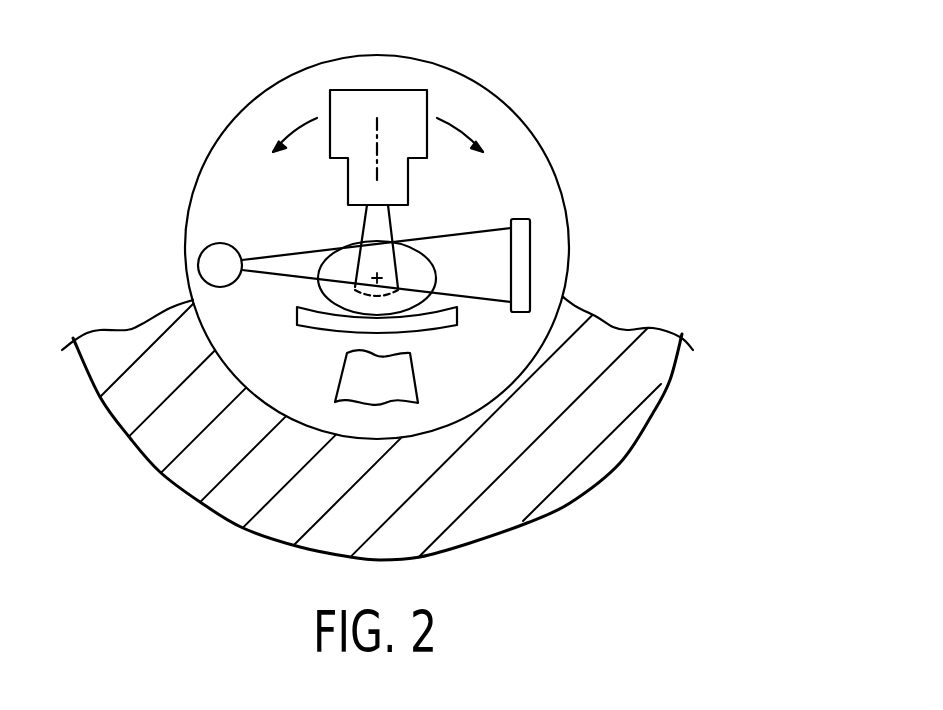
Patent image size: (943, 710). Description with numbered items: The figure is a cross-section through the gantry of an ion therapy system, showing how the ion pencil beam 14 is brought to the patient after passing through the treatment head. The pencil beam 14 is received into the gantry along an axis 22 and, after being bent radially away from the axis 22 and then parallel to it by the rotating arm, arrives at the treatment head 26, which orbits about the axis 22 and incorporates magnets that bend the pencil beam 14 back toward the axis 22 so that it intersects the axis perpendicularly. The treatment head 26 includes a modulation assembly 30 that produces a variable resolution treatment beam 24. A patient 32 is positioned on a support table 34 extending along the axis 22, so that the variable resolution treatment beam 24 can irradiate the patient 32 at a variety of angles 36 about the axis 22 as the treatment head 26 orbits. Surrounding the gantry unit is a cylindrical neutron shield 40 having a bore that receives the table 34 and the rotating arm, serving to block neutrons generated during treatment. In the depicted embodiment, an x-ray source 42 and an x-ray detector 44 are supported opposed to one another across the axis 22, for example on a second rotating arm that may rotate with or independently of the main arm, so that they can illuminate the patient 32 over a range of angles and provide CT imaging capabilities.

The pencil beam 14 is at (383, 138).
The axis 22 is at (375, 275).
The variable resolution treatment beam 24 is at (380, 222).
The treatment head 26 is at (342, 119).
The modulation assembly 30 is at (348, 182).
The patient 32 is at (312, 291).
The support table 34 is at (315, 325).
The angles 36 is at (298, 132).
The cylindrical neutron shield 40 is at (603, 342).
The x-ray source 42 is at (213, 260).
The x-ray detector 44 is at (518, 245).